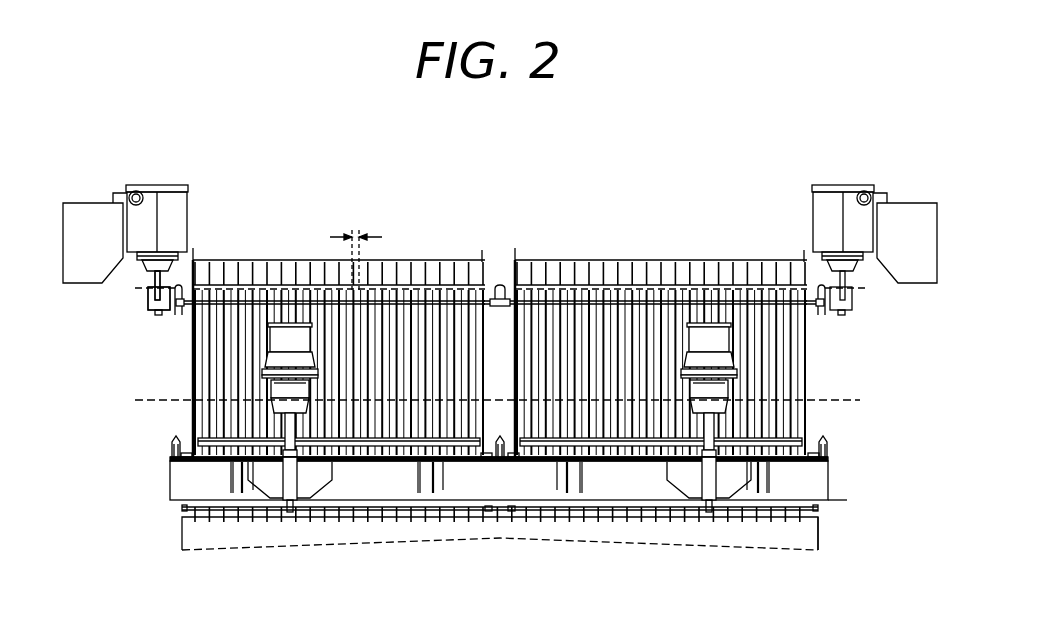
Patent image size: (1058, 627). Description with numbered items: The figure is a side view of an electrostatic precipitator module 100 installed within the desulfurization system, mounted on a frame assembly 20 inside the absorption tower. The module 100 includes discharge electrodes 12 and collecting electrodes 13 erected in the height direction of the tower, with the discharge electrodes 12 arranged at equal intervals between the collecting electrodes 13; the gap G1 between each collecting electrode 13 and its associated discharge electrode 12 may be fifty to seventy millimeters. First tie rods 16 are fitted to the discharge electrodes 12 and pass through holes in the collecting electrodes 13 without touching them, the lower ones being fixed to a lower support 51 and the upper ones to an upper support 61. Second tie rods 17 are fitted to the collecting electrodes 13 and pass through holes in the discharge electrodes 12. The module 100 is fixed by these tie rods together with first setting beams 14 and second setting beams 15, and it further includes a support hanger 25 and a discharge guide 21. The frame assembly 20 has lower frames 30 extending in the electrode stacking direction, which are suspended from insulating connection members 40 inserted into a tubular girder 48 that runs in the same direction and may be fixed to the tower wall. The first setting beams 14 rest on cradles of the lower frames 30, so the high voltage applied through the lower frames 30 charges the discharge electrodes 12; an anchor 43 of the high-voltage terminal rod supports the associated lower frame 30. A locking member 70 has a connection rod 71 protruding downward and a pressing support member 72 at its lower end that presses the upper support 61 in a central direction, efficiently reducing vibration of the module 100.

The electrostatic precipitator module 100 is at (519, 148).
The locking member 70 is at (173, 203).
The connection rod 71 is at (160, 278).
The insulating connection member 40 is at (290, 342).
The gap G1 is at (359, 250).
The upper support 61 is at (500, 286).
The pressing support member 72 is at (150, 302).
The first tie rod 16 is at (572, 301).
The second setting beam 15 is at (680, 272).
The discharge electrode 12 is at (203, 334).
The collecting electrode 13 is at (196, 362).
The first setting beam 14 is at (785, 440).
The tubular girder 48 is at (147, 401).
The lower support 51 is at (829, 455).
The frame assembly 20 is at (170, 480).
The lower frame 30 is at (173, 497).
The discharge guide 21 is at (318, 538).
The second tie rod 17 is at (543, 509).
The anchor 43 is at (687, 480).
The support hanger 25 is at (822, 535).